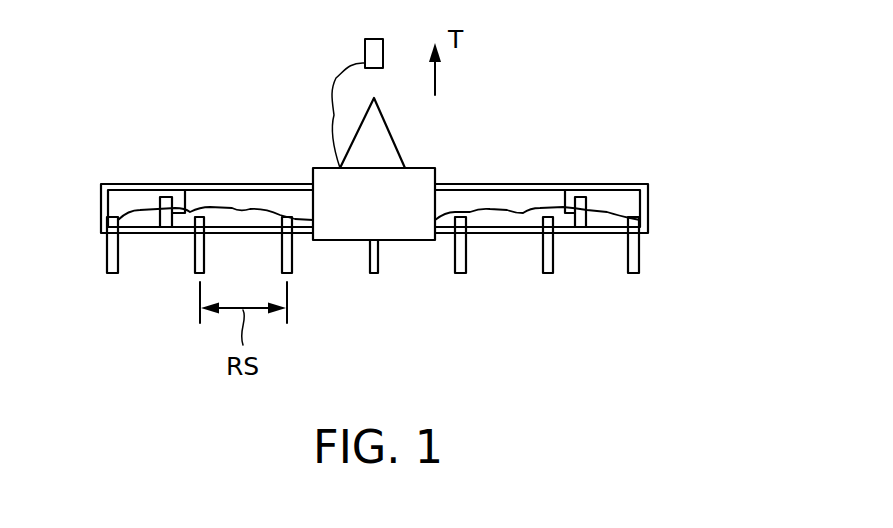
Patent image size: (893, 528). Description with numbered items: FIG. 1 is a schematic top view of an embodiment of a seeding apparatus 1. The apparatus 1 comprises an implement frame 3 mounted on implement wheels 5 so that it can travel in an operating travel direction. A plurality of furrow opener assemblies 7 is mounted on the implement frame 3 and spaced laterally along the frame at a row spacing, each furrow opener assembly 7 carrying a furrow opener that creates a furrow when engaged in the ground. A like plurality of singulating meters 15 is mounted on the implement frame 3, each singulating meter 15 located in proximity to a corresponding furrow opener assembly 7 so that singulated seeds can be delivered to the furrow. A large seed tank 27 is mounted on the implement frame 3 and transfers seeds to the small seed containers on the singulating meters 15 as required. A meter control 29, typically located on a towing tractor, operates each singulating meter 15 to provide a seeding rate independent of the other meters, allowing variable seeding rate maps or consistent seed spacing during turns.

The seeding apparatus 1 is at (705, 132).
The implement frame 3 is at (228, 183).
The implement wheels 5 is at (161, 199).
The furrow opener assemblies 7 is at (107, 257).
The singulating meters 15 is at (194, 218).
The large seed tank 27 is at (435, 168).
The meter control 29 is at (365, 40).